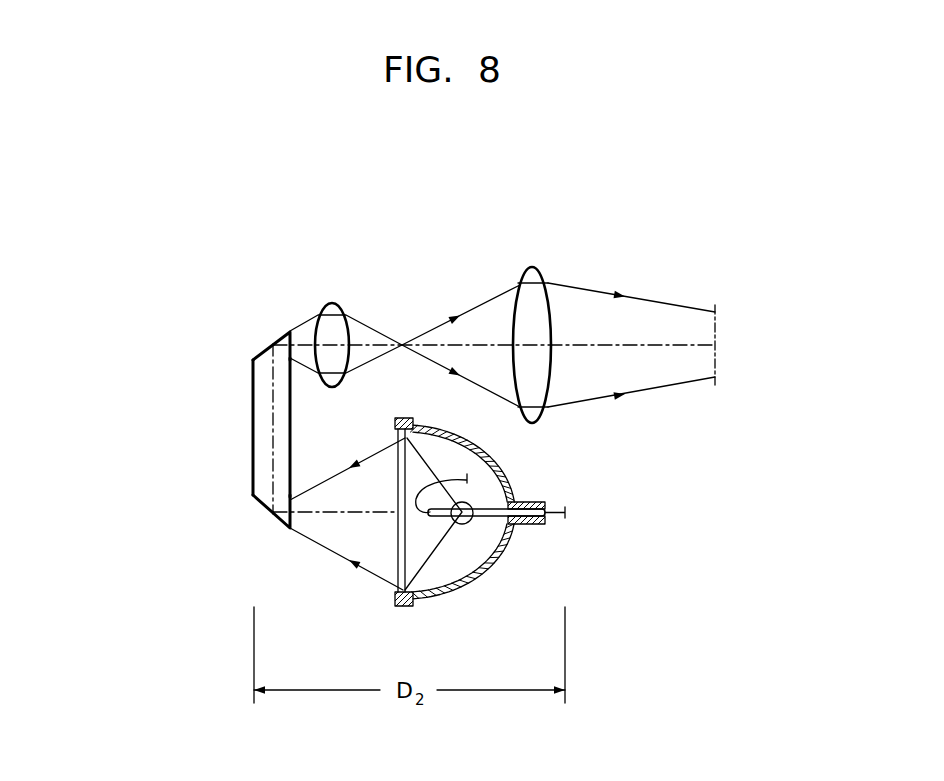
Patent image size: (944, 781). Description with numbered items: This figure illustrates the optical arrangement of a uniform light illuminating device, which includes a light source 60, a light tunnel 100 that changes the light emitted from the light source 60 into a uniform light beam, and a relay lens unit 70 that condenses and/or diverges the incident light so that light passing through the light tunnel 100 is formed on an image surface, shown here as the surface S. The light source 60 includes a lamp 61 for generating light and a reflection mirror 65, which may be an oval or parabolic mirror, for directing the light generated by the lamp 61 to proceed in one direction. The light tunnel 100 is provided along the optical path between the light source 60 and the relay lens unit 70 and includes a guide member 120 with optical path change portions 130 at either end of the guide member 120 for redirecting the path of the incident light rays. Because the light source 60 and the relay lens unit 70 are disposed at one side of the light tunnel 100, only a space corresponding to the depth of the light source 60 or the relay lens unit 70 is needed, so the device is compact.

The light tunnel 100 is at (168, 409).
The guide member 120 is at (248, 361).
The optical path change portions 130 is at (248, 333).
The relay lens unit 70 is at (532, 263).
The light source 60 is at (478, 586).
The lamp 61 is at (470, 504).
The reflection mirror 65 is at (503, 550).
The screen S is at (713, 385).